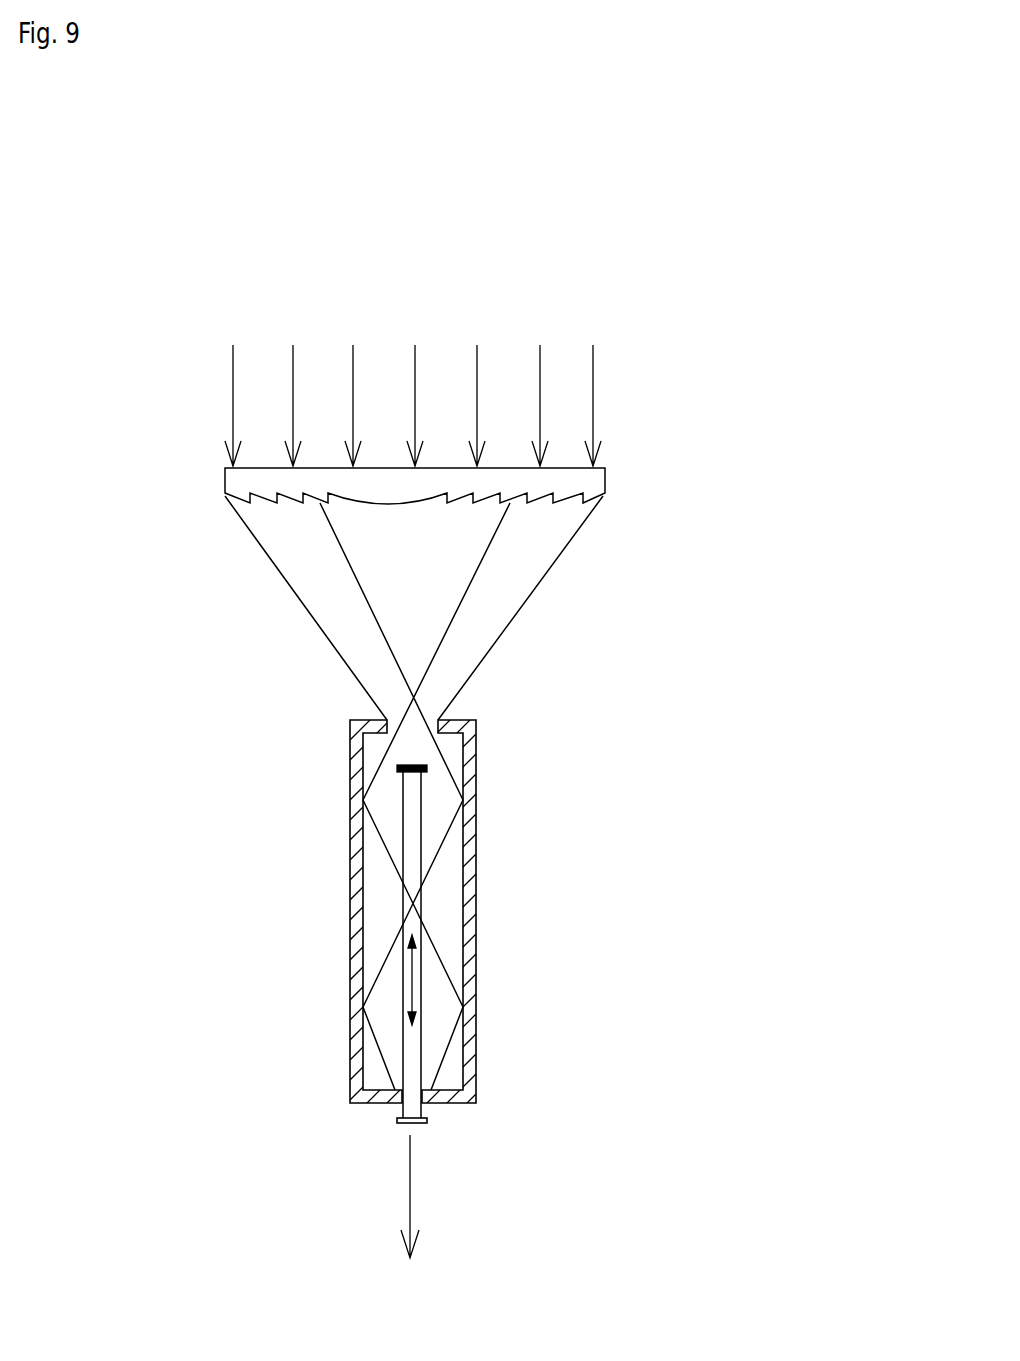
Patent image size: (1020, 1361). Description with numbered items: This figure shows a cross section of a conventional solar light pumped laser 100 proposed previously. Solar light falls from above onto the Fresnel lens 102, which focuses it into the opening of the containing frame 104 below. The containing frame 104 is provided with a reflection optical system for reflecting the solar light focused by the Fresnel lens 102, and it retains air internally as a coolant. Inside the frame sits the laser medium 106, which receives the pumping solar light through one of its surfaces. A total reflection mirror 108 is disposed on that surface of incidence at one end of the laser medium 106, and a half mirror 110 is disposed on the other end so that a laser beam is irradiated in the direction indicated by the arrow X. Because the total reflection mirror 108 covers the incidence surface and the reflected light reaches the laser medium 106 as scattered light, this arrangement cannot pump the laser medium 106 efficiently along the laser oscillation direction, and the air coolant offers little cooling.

The solar light pumped laser 100 is at (670, 348).
The Fresnel lens 102 is at (593, 495).
The containing frame 104 is at (477, 897).
The laser medium 106 is at (417, 1008).
The total reflection mirror 108 is at (427, 770).
The half mirror 110 is at (427, 1122).